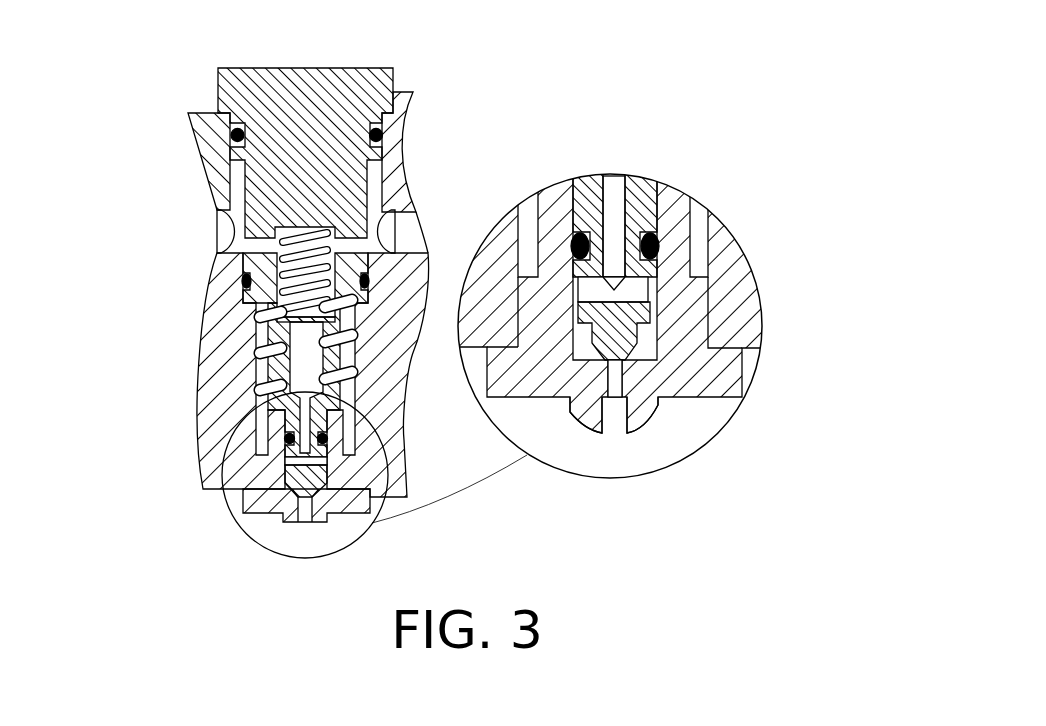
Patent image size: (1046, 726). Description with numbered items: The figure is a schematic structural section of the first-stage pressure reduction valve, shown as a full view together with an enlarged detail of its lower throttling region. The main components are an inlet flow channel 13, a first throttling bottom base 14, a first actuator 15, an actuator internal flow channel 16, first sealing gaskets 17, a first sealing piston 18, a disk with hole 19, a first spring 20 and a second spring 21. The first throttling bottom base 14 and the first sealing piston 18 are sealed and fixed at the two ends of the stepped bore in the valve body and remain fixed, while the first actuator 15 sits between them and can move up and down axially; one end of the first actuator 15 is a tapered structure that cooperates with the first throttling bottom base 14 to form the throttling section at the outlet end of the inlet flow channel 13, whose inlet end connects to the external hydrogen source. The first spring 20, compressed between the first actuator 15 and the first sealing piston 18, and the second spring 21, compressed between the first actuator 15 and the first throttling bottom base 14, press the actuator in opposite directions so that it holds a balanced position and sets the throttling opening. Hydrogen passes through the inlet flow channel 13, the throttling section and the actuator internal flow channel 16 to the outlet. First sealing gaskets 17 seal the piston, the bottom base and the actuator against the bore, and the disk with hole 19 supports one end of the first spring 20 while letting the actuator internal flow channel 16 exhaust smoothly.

The inlet flow channel 13 is at (610, 422).
The first throttling bottom base 14 is at (683, 382).
The first actuator 15 is at (635, 198).
The actuator internal flow channel 16 is at (610, 188).
The first sealing gasket 17 is at (575, 233).
The first sealing piston 18 is at (373, 107).
The disk with hole 19 is at (217, 253).
The first spring 20 is at (243, 283).
The second spring 21 is at (257, 352).